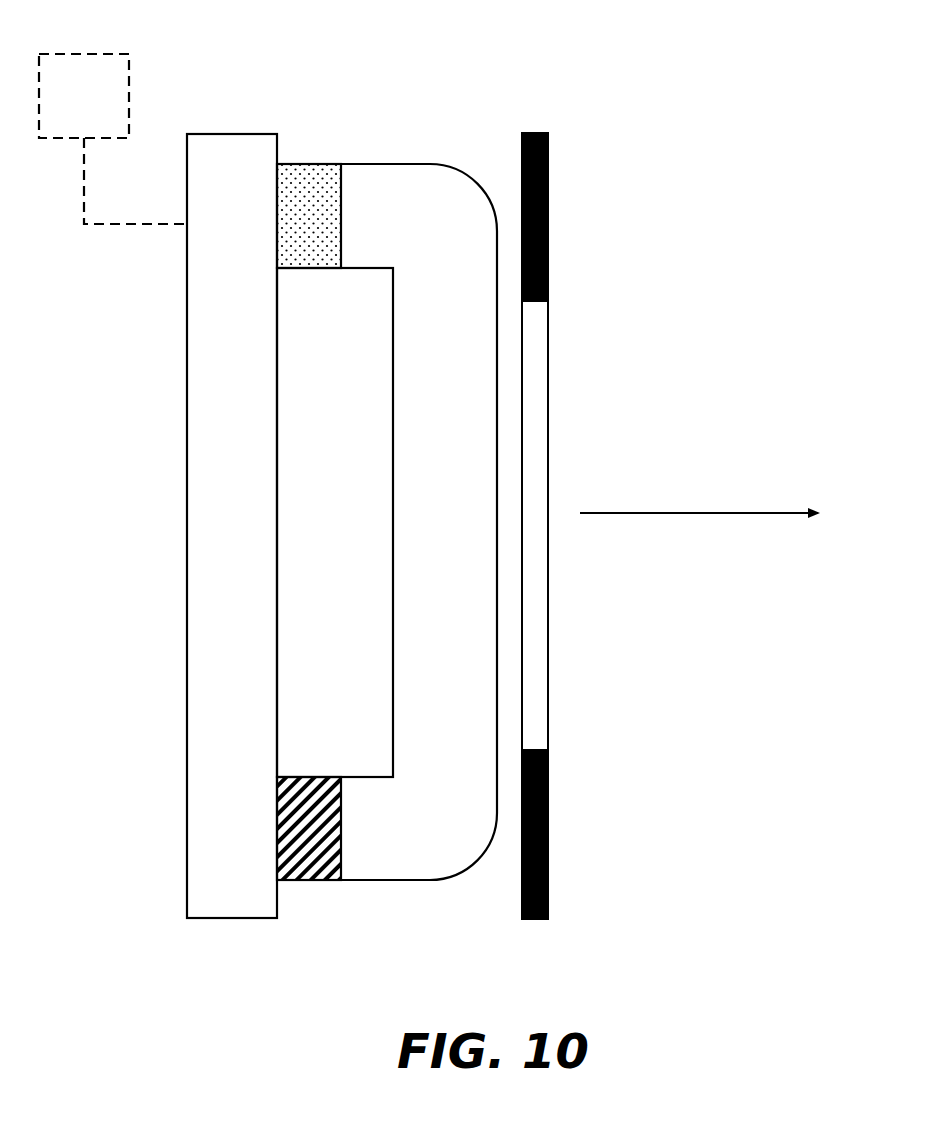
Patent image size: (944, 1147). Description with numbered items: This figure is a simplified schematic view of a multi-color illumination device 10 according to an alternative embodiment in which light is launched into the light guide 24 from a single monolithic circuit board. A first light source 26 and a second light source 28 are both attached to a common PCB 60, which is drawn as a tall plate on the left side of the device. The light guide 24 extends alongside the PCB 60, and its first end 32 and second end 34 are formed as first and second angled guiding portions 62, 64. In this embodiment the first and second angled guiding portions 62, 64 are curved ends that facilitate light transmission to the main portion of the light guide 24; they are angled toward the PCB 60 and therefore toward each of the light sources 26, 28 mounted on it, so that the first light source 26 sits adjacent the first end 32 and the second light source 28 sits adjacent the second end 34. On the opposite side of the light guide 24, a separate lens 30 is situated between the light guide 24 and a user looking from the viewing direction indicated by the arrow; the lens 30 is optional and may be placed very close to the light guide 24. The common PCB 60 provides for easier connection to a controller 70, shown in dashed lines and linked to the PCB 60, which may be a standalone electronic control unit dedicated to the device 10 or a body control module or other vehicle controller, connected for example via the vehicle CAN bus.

The multi-color illumination device 10 is at (648, 150).
The light guide 24 is at (410, 497).
The first light source 26 is at (302, 177).
The second light source 28 is at (329, 878).
The lens 30 is at (540, 335).
The first end 32 is at (358, 178).
The second end 34 is at (353, 855).
The PCB 60 is at (193, 387).
The first angled guiding portion 62 is at (455, 197).
The second angled guiding portion 64 is at (460, 838).
The controller 70 is at (129, 82).